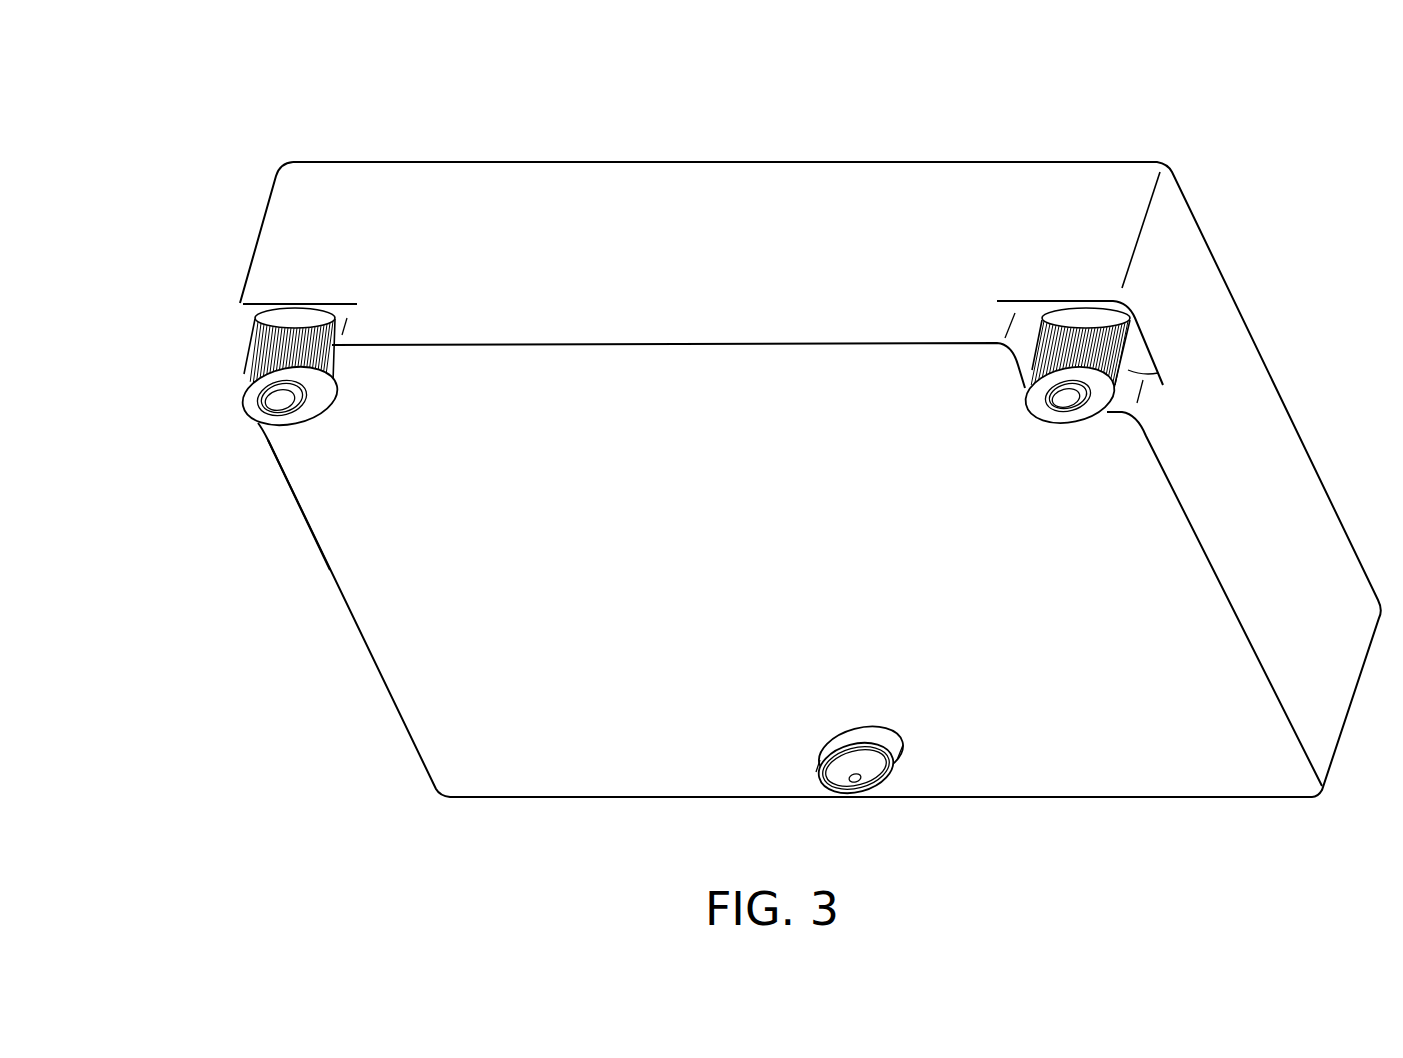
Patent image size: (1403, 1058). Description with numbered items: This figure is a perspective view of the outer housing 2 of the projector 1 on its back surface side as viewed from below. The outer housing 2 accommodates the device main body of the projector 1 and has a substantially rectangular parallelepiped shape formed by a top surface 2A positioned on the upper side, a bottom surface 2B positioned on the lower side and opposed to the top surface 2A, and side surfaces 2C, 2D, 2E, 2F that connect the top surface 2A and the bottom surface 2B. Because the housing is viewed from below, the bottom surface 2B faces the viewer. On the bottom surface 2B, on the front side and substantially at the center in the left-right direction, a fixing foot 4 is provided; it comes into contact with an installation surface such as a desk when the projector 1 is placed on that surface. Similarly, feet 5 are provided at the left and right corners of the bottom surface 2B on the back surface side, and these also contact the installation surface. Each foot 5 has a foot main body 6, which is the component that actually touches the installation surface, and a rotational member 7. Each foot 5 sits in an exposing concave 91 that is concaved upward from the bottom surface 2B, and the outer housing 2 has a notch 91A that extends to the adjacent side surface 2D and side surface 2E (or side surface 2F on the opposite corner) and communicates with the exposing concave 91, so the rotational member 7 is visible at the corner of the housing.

The projector 1 is at (266, 116).
The outer housing 2 is at (412, 177).
The top surface 2A is at (1210, 250).
The bottom surface 2B is at (557, 757).
The side surface 2C is at (1097, 798).
The side surface 2D is at (658, 175).
The side surface 2E is at (1290, 433).
The side surface 2F is at (338, 593).
The fixing foot 4 is at (870, 783).
The foot 5 is at (251, 370).
The foot main body 6 is at (269, 396).
The rotational member 7 is at (257, 343).
The exposing concave 91 is at (243, 325).
The notch 91A is at (337, 312).